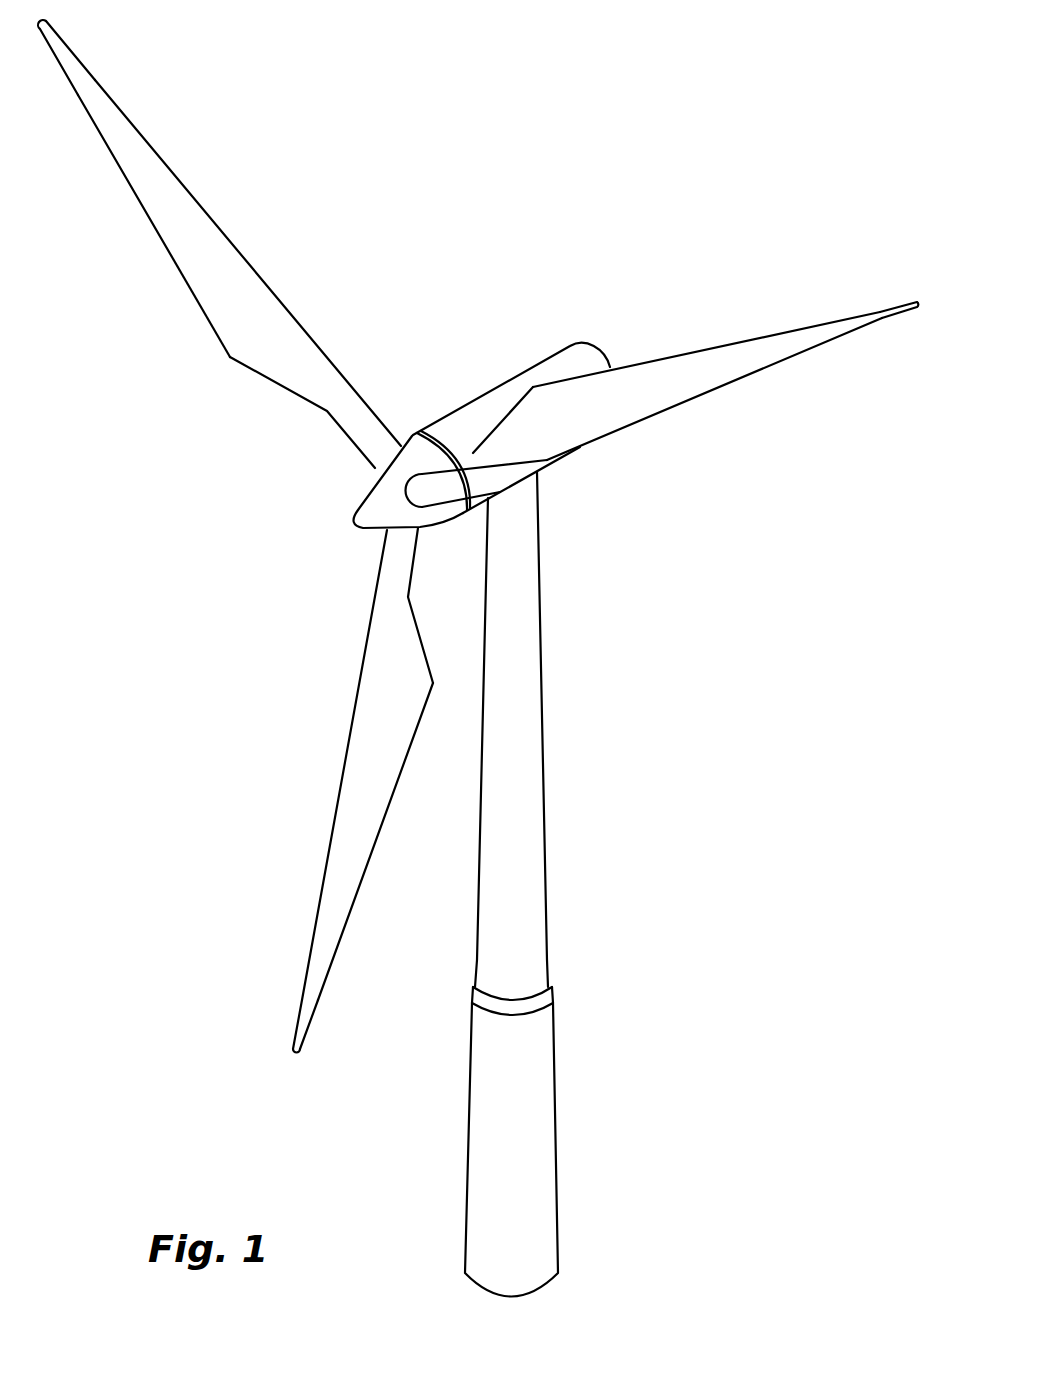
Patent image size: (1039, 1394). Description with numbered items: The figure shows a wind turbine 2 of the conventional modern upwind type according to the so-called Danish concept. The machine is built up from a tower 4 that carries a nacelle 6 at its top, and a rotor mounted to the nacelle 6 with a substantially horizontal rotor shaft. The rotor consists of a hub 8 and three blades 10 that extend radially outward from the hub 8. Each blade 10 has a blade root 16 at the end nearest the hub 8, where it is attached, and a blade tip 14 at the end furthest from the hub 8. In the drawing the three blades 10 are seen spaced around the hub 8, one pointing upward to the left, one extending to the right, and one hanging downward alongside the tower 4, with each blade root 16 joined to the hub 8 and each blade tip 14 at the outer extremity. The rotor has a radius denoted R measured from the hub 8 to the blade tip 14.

The wind turbine 2 is at (660, 818).
The tower 4 is at (530, 733).
The nacelle 6 is at (473, 413).
The hub 8 is at (373, 503).
The blade 10 is at (243, 323).
The blade tip 14 is at (85, 78).
The blade root 16 is at (380, 453).